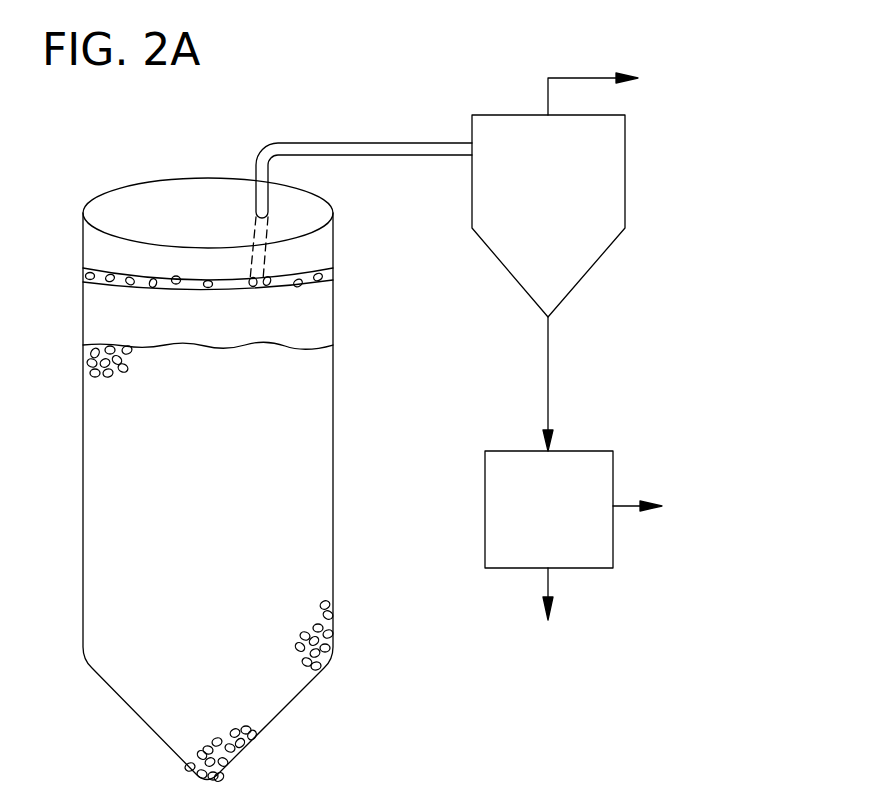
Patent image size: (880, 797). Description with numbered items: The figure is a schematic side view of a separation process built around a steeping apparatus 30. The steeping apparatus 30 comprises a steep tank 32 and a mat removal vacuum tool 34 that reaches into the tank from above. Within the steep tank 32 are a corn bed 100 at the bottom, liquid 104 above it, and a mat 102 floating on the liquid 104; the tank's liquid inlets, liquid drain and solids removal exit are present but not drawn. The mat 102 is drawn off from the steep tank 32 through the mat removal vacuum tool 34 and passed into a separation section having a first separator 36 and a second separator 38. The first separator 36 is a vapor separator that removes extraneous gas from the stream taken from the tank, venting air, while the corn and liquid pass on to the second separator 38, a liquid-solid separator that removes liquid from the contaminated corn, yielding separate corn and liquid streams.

The steeping apparatus 30 is at (66, 160).
The steep tank 32 is at (82, 462).
The mat removal vacuum tool 34 is at (338, 142).
The first separator 36 is at (626, 197).
The second separator 38 is at (485, 497).
The corn bed 100 is at (228, 587).
The mat 102 is at (92, 260).
The liquid 104 is at (240, 324).